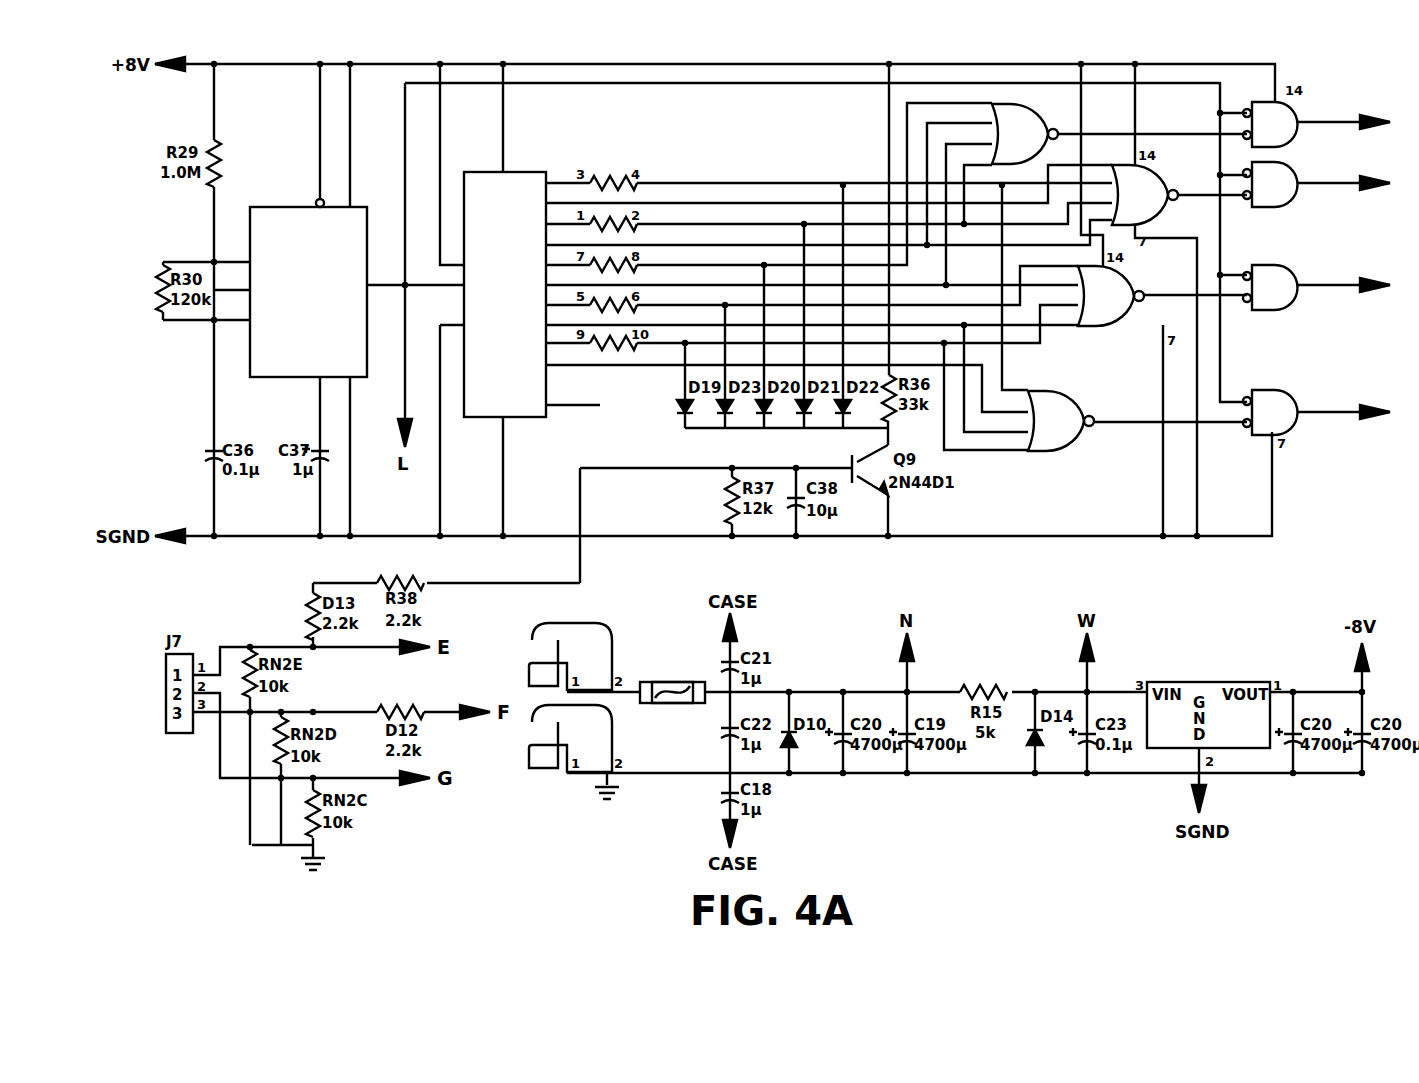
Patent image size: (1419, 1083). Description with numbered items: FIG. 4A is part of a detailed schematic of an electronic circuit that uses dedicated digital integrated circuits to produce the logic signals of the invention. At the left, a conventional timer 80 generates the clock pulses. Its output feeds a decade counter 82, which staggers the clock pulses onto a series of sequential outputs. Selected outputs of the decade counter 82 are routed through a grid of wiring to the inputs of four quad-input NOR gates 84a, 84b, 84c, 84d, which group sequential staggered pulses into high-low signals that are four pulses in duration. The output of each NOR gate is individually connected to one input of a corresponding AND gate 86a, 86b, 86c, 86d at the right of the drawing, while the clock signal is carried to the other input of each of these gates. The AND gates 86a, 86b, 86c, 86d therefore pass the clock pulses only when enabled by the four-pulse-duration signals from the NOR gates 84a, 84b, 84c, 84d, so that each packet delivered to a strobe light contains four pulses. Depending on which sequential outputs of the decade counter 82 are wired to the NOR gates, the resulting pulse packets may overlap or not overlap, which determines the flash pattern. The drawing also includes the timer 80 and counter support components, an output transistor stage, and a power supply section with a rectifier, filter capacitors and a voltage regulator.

The 555 timer 80 is at (308, 277).
The decade counter 82 is at (509, 314).
The quad-input NOR gate 84a is at (1036, 112).
The quad-input NOR gate 84b is at (1158, 210).
The quad-input NOR gate 84c is at (1124, 310).
The quad-input NOR gate 84d is at (1066, 448).
The AND gate 86a is at (1296, 138).
The AND gate 86b is at (1296, 198).
The AND gate 86c is at (1296, 302).
The AND gate 86d is at (1296, 428).